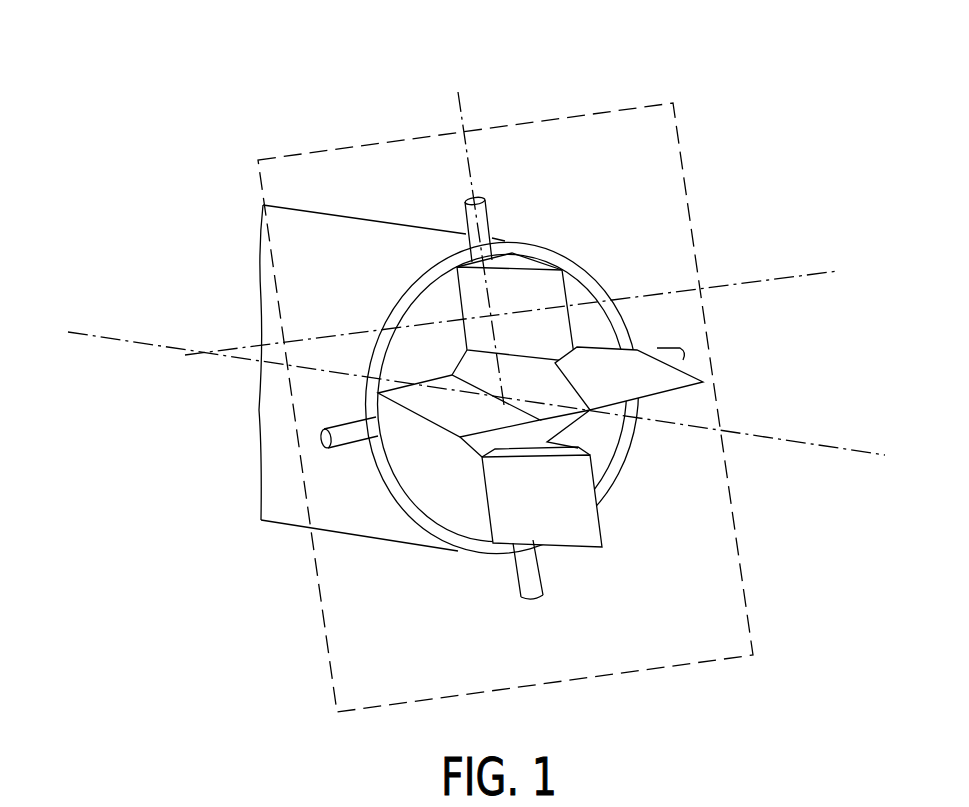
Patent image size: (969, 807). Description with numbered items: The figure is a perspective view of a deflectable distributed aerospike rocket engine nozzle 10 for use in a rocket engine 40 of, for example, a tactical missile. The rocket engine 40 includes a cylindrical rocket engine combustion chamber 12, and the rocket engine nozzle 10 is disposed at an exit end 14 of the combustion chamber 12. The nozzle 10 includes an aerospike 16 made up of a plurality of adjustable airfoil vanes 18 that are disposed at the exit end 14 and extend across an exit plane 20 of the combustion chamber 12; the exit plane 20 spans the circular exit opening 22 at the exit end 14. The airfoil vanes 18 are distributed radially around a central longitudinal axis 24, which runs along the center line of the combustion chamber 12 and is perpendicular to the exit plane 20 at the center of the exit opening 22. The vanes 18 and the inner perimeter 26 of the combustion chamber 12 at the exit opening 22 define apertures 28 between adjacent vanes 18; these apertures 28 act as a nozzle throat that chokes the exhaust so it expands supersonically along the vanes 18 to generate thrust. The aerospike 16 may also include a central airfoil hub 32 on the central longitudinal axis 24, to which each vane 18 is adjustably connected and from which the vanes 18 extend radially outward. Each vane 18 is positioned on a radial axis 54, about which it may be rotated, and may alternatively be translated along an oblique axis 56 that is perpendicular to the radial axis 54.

The deflectable distributed aerospike rocket engine nozzle 10 is at (570, 232).
The rocket engine combustion chamber 12 is at (333, 282).
The exit end 14 is at (463, 574).
The aerospike 16 is at (595, 316).
The adjustable airfoil vane 18 is at (567, 522).
The exit plane 20 is at (712, 660).
The exit opening 22 is at (461, 372).
The central longitudinal axis 24 is at (802, 442).
The inner perimeter 26 is at (411, 292).
The aperture 28 is at (453, 500).
The central airfoil hub 32 is at (480, 443).
The rocket engine 40 is at (420, 90).
The radial axis 54 is at (460, 104).
The oblique axis 56 is at (832, 271).